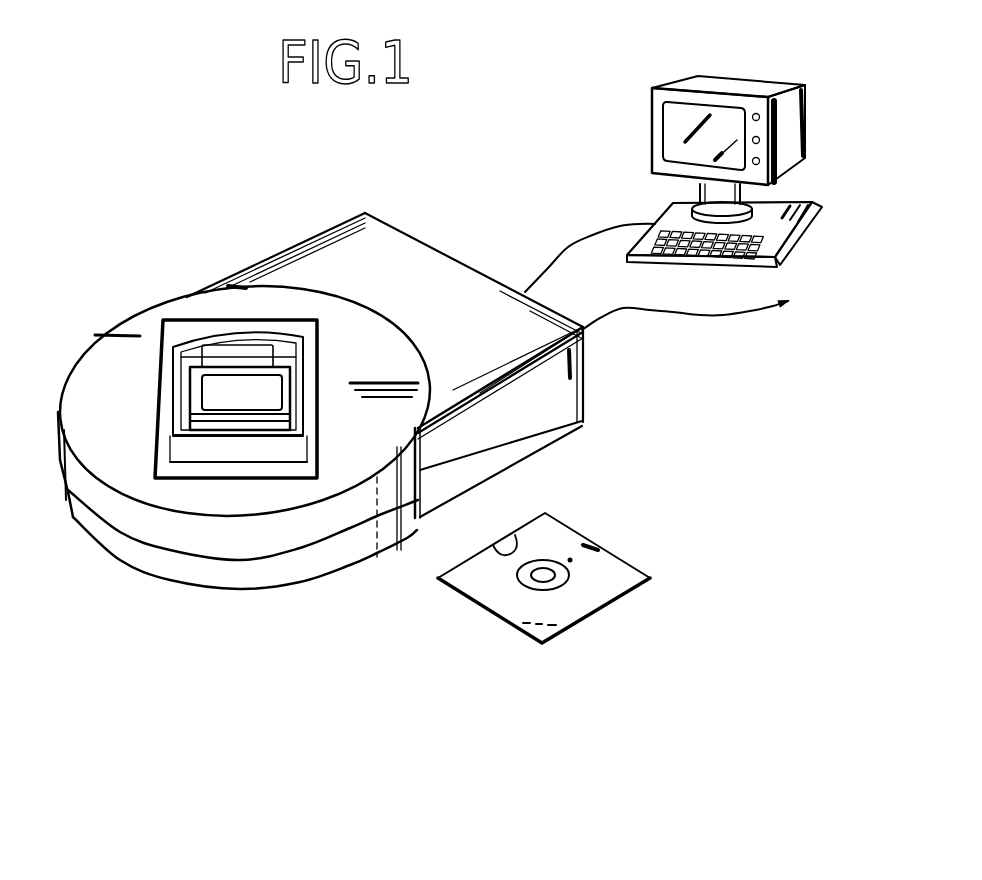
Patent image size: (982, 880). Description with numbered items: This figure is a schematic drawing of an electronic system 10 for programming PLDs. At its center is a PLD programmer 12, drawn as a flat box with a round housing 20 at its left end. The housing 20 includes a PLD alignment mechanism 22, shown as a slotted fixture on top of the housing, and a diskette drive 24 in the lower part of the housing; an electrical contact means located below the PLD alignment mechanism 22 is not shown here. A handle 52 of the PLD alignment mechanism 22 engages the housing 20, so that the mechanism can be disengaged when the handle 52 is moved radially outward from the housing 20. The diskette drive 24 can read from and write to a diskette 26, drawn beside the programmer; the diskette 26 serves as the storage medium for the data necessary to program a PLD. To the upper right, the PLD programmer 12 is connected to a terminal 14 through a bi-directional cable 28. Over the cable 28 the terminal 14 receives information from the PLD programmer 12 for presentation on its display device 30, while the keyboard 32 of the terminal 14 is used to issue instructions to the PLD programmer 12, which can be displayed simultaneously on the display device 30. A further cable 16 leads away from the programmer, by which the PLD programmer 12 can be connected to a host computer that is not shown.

The electronic system 10 is at (692, 413).
The PLD programmer 12 is at (533, 445).
The terminal 14 is at (824, 132).
The cable 16 is at (721, 316).
The housing 20 is at (266, 206).
The PLD alignment mechanism 22 is at (187, 298).
The diskette drive 24 is at (210, 591).
The diskette 26 is at (582, 601).
The bi-directional cable 28 is at (600, 232).
The display device 30 is at (679, 88).
The keyboard 32 is at (778, 259).
The handle 52 is at (105, 538).